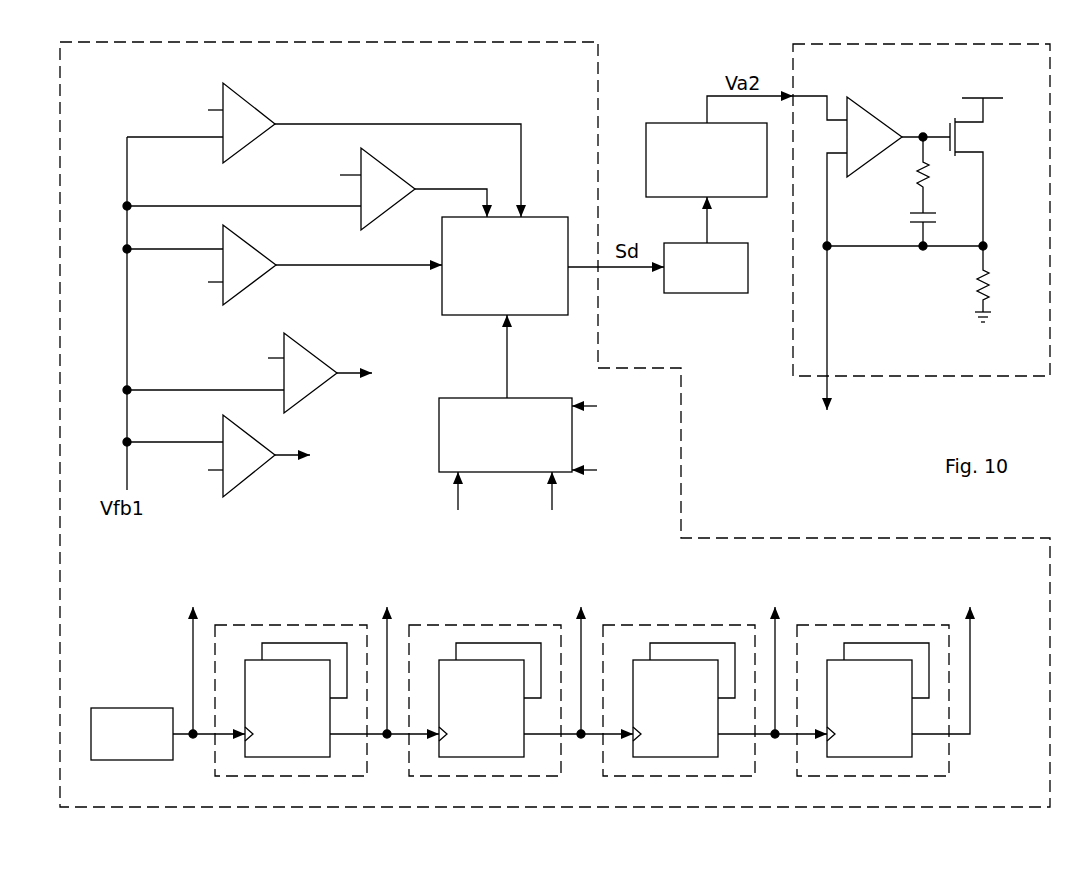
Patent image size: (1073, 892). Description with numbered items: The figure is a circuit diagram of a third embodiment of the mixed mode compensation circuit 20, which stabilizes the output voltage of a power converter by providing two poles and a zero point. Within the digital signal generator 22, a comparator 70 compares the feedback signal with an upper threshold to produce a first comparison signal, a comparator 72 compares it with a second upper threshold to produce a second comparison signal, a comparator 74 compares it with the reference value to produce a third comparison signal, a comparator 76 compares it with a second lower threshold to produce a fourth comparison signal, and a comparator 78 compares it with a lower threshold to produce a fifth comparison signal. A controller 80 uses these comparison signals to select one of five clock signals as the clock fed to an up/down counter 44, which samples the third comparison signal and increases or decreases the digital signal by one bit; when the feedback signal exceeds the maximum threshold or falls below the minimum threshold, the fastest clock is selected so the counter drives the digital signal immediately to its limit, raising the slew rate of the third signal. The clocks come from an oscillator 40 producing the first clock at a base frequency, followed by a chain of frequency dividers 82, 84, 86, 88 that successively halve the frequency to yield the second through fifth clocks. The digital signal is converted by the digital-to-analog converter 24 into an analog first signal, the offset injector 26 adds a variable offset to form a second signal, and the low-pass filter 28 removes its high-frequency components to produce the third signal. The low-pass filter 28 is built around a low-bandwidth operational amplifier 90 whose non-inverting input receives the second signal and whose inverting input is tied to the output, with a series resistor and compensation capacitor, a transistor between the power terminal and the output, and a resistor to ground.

The mixed mode compensation circuit 20 is at (757, 484).
The digital signal generator 22 is at (836, 537).
The digital-to-analog converter 24 is at (710, 294).
The offset injector 26 is at (676, 123).
The low-pass filter 28 is at (793, 332).
The oscillator 40 is at (131, 708).
The up/down counter 44 is at (540, 316).
The comparator 70 is at (250, 100).
The comparator 72 is at (316, 350).
The comparator 74 is at (386, 220).
The comparator 76 is at (250, 477).
The comparator 78 is at (250, 287).
The controller 80 is at (439, 440).
The frequency divider 82 is at (291, 625).
The frequency divider 84 is at (485, 625).
The frequency divider 86 is at (679, 625).
The frequency divider 88 is at (873, 625).
The low-bandwidth operational amplifier 90 is at (876, 108).